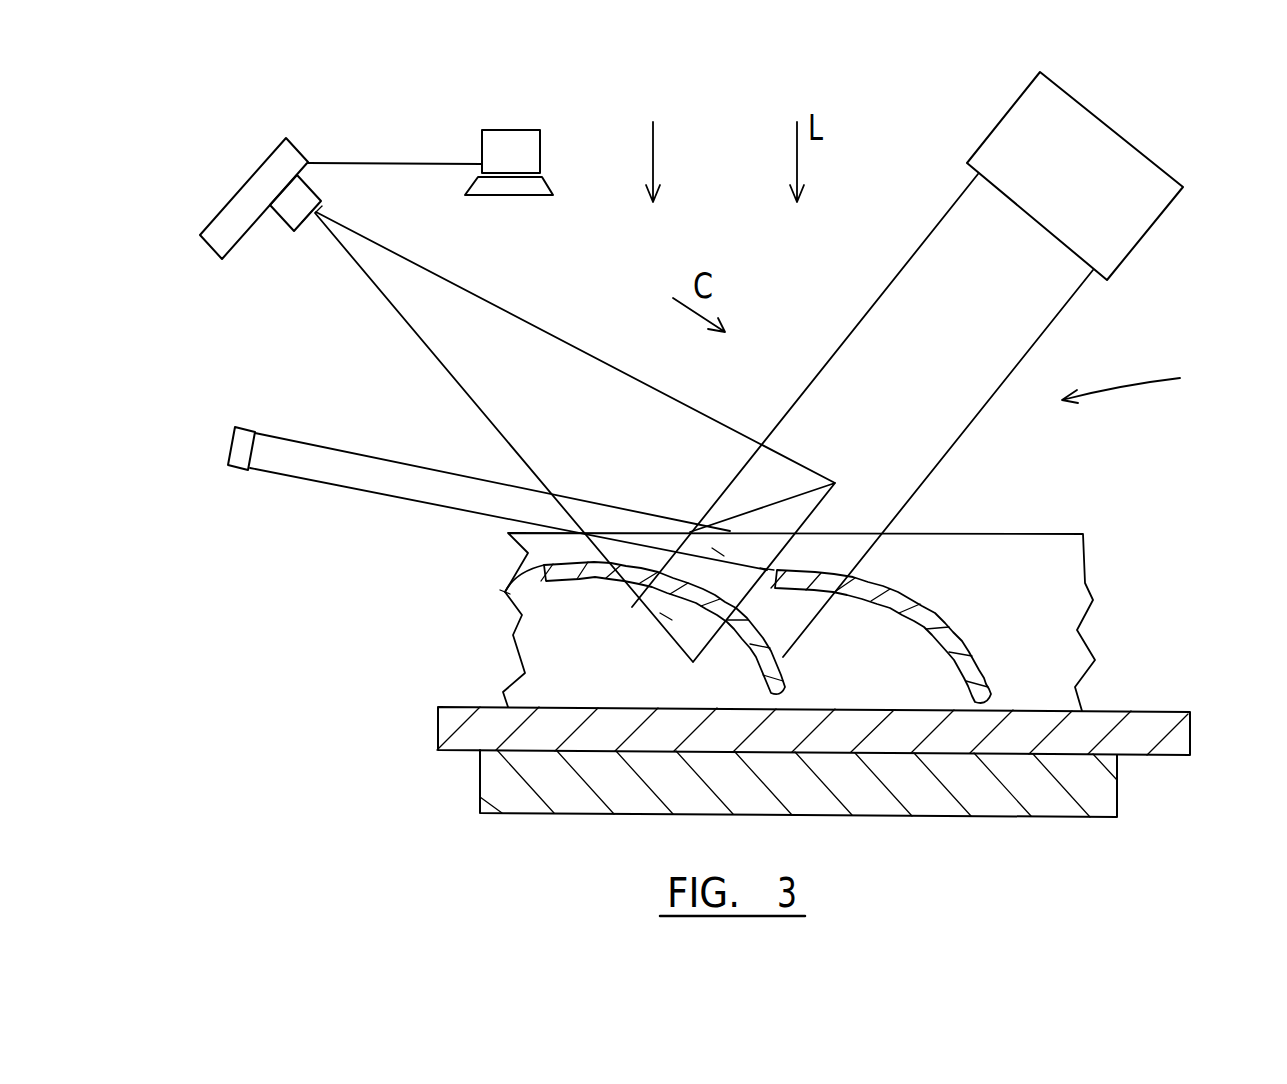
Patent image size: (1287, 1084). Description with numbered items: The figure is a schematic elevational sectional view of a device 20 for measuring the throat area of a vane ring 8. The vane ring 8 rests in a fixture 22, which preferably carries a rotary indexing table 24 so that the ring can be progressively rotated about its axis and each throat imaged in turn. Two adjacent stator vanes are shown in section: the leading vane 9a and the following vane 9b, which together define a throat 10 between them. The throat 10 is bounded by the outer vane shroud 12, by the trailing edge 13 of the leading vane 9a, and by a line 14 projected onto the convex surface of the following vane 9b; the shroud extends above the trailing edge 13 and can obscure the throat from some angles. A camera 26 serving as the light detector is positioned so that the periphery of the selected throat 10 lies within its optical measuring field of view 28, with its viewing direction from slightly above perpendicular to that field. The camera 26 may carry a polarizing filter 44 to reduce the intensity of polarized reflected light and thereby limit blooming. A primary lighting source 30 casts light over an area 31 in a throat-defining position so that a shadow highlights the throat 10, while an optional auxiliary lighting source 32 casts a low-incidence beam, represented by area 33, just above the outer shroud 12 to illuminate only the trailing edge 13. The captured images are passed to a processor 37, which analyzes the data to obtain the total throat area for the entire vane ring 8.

The vane ring 8 is at (1098, 633).
The leading vane 9a is at (947, 612).
The following vane 9b is at (733, 656).
The throat 10 is at (718, 552).
The outer vane shroud 12 is at (850, 622).
The trailing edge 13 is at (767, 567).
The line 14 is at (667, 618).
The device 20 is at (931, 242).
The fixture 22 is at (1133, 713).
The rotary indexing table 24 is at (1118, 790).
The camera 26 is at (250, 178).
The field of view 28 is at (836, 490).
The primary lighting source 30 is at (1140, 240).
The area of light 31 is at (887, 320).
The auxiliary lighting source 32 is at (240, 427).
The area of light 33 is at (333, 470).
The processor 37 is at (505, 130).
The polarizing filter 44 is at (325, 207).